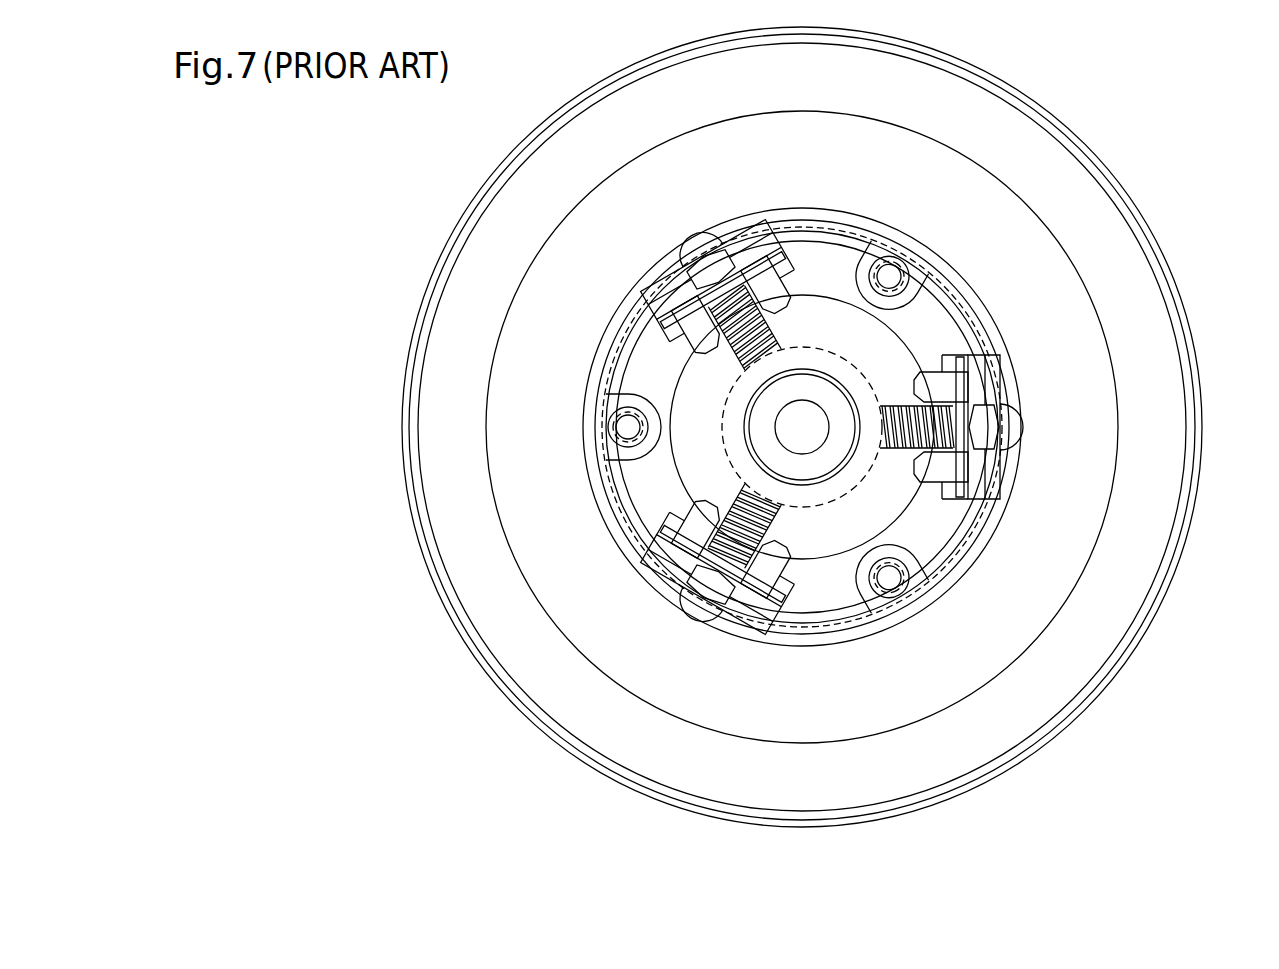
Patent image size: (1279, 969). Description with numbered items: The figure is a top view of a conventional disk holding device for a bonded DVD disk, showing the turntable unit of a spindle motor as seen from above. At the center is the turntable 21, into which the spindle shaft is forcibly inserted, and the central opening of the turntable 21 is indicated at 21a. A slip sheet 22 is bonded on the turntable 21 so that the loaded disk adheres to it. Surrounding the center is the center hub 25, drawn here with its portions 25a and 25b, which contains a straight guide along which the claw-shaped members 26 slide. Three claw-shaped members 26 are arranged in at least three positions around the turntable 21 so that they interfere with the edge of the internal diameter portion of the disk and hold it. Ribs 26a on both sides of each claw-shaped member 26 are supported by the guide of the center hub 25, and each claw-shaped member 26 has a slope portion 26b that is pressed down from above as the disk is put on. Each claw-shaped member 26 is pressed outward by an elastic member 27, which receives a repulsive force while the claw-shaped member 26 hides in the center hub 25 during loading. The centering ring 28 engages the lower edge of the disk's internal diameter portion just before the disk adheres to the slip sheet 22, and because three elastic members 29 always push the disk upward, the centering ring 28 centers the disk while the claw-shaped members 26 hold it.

The turntable 21 is at (1022, 605).
The central hub hole 21a is at (803, 385).
The slip sheet 22 is at (1130, 575).
The center hub 25 is at (1070, 331).
The clamp holder body 25a is at (663, 592).
The inner cylindrical portion 25b is at (853, 363).
The claw-shaped member 26 is at (1114, 427).
The rib 26a is at (937, 383).
The slope portion 26b is at (1017, 420).
The elastic member 27 is at (665, 484).
The centering ring 28 is at (607, 352).
The elastic member 29 is at (610, 410).